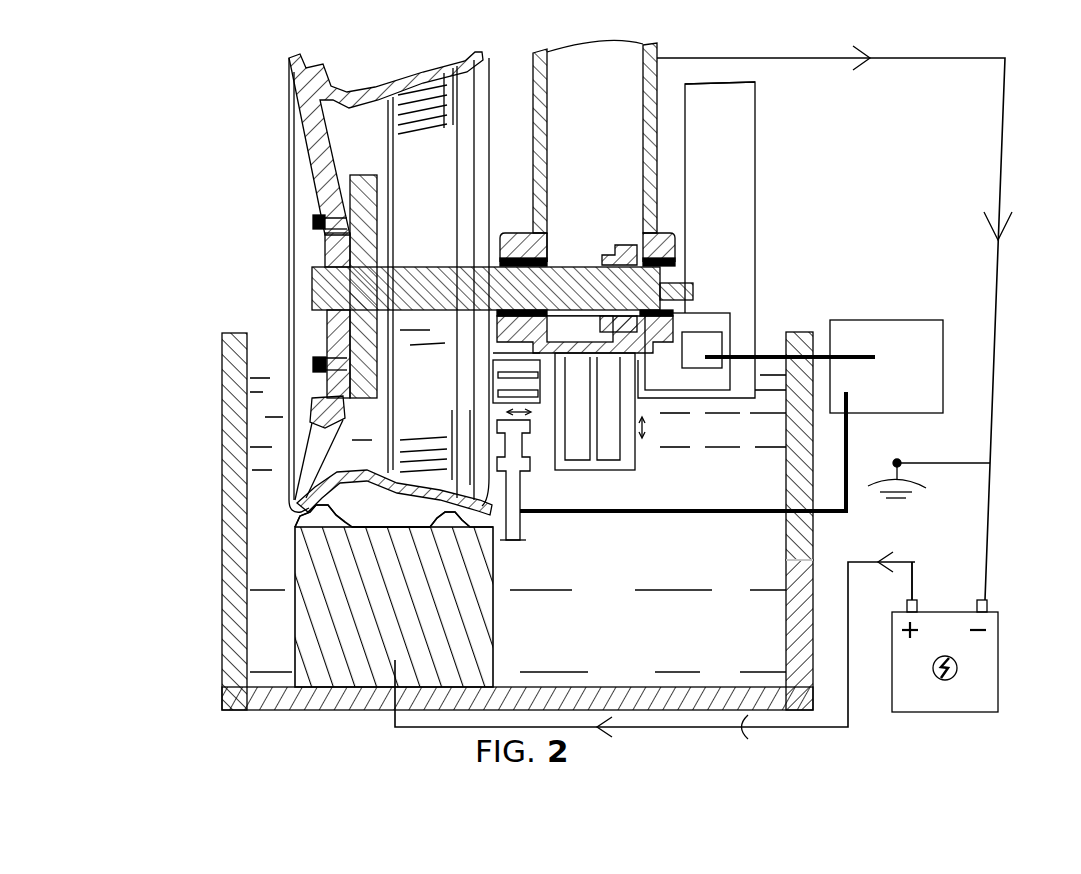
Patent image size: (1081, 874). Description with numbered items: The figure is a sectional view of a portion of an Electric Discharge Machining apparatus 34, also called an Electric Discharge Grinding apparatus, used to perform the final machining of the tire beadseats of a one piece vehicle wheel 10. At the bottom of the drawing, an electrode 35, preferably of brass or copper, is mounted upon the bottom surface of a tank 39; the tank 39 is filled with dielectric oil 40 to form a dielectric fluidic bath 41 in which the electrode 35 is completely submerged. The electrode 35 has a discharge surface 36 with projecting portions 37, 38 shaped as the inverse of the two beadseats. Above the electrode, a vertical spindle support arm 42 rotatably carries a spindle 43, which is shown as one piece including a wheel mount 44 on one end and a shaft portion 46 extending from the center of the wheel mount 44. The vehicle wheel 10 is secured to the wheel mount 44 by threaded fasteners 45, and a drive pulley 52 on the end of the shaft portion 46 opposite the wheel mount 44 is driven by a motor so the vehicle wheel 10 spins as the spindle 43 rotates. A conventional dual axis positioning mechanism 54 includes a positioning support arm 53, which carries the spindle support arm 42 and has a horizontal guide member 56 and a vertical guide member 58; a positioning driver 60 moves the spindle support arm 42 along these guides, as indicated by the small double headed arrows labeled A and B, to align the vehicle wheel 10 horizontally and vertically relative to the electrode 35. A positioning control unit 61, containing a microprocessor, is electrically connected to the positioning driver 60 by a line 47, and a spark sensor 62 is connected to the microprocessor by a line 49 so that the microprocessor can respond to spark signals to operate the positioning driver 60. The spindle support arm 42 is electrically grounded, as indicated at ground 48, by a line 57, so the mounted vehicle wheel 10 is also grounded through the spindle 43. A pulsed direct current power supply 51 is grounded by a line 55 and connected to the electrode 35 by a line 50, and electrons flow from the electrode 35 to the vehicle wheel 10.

The vehicle wheel 10 is at (288, 115).
The Electric Discharge Machining apparatus 34 is at (215, 232).
The electrode 35 is at (480, 628).
The discharge surface 36 is at (382, 521).
The projecting portion 37 is at (450, 513).
The projecting portion 38 is at (303, 518).
The tank 39 is at (805, 542).
The dielectric oil 40 is at (735, 560).
The dielectric fluidic bath 41 is at (178, 523).
The spindle support arm 42 is at (514, 140).
The spindle 43 is at (432, 267).
The wheel mount 44 is at (372, 194).
The threaded fasteners 45 is at (313, 223).
The shaft portion 46 is at (587, 263).
The line 47 is at (823, 357).
The ground 48 is at (933, 462).
The line 49 is at (850, 437).
The line 50 is at (412, 727).
The power supply 51 is at (977, 688).
The drive pulley 52 is at (623, 247).
The positioning support arm 53 is at (757, 232).
The dual axis positioning mechanism 54 is at (795, 166).
The line 55 is at (987, 558).
The horizontal guide member 56 is at (546, 405).
The line 57 is at (697, 57).
The vertical guide member 58 is at (627, 462).
The positioning driver 60 is at (748, 326).
The positioning control unit 61 is at (900, 342).
The spark sensor 62 is at (520, 536).